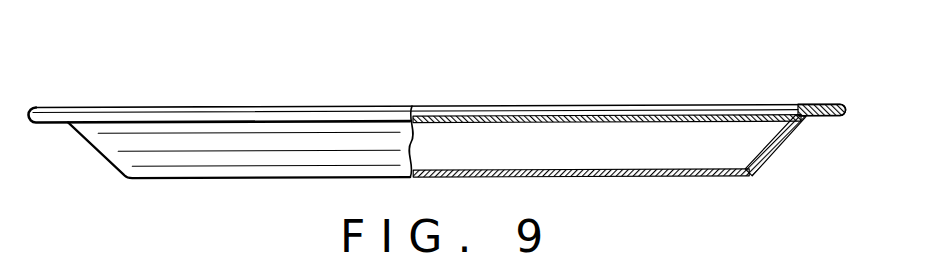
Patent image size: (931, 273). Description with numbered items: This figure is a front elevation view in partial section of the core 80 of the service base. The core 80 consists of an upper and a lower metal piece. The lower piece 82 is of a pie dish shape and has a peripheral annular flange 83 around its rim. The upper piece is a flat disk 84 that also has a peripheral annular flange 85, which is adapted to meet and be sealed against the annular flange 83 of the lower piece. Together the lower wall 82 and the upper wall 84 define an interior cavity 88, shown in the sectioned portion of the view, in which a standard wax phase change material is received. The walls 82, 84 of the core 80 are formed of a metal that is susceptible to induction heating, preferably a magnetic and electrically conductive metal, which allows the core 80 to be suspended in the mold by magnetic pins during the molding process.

The core 80 is at (577, 60).
The lower piece 82 is at (652, 177).
The peripheral annular flange 83 is at (824, 118).
The flat disk 84 is at (692, 115).
The peripheral annular flange 85 is at (827, 104).
The interior cavity 88 is at (465, 145).